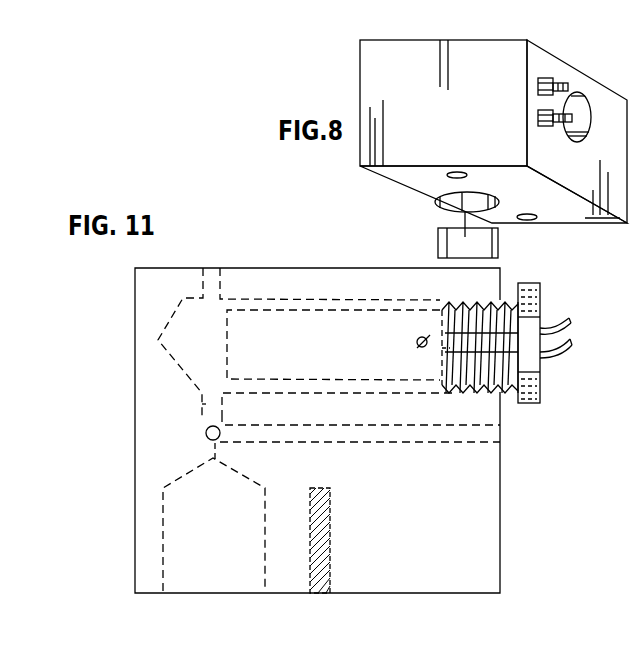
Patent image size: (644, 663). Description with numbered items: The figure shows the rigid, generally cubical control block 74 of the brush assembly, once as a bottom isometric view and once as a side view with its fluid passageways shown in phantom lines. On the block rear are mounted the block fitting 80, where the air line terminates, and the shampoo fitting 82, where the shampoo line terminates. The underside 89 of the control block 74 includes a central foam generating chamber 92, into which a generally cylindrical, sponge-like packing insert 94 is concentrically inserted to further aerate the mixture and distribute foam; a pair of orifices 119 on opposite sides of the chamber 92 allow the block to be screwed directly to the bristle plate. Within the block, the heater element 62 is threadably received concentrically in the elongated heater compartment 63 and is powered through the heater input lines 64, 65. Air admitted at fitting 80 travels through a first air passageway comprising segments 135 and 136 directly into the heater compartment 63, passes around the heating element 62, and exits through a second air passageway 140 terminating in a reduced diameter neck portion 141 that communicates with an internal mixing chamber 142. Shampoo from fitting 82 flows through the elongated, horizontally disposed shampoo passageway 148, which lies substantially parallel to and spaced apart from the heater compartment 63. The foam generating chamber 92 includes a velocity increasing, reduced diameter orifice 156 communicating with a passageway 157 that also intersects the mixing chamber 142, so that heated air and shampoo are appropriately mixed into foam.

In FIG. 8, the control block 74 is at (492, 60).
In FIG. 11, the control block 74 is at (283, 266).
In FIG. 8, the block fitting 80 is at (550, 78).
In FIG. 8, the shampoo fitting 82 is at (541, 128).
In FIG. 8, the heater compartment 63 is at (578, 107).
In FIG. 11, the heater compartment 63 is at (358, 302).
In FIG. 8, the orifices 119 is at (449, 176).
In FIG. 11, the orifices 119 is at (330, 533).
In FIG. 8, the foam generating chamber 92 is at (453, 197).
In FIG. 11, the foam generating chamber 92 is at (175, 522).
In FIG. 8, the underside 89 is at (526, 187).
In FIG. 8, the packing insert 94 is at (438, 236).
In FIG. 11, the heater element 62 is at (472, 302).
In FIG. 11, the heater input line 64 is at (553, 326).
In FIG. 11, the heater input line 65 is at (561, 352).
In FIG. 11, the first air passageway segment 135 is at (433, 333).
In FIG. 11, the first air passageway segment 136 is at (442, 355).
In FIG. 11, the second air passageway 140 is at (208, 410).
In FIG. 11, the reduced diameter neck portion 141 is at (214, 420).
In FIG. 11, the mixing chamber 142 is at (206, 433).
In FIG. 11, the shampoo passageway 148 is at (457, 435).
In FIG. 11, the reduced diameter orifice 156 is at (216, 459).
In FIG. 11, the passageway 157 is at (210, 450).